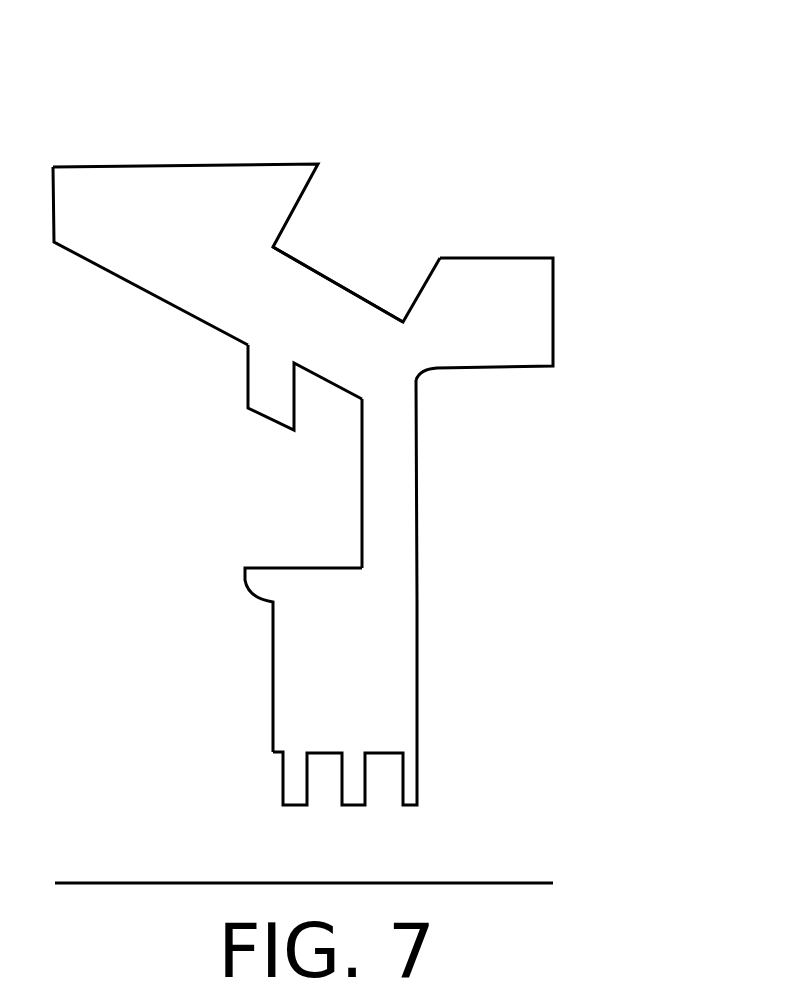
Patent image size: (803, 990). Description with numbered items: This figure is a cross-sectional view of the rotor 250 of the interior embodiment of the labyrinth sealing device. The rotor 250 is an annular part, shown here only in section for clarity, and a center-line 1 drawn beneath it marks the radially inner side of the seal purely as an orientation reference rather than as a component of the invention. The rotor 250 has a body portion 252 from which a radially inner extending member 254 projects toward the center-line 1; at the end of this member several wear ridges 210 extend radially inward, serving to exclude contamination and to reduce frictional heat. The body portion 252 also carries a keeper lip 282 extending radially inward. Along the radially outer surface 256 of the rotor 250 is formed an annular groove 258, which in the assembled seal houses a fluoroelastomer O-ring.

The center-line 1 is at (522, 886).
The wear ridge 210 is at (415, 790).
The rotor 250 is at (487, 283).
The body portion 252 is at (352, 330).
The radially inner extending member 254 is at (388, 608).
The radially outer surface 256 is at (198, 162).
The annular groove 258 is at (343, 263).
The keeper lip 282 is at (267, 383).